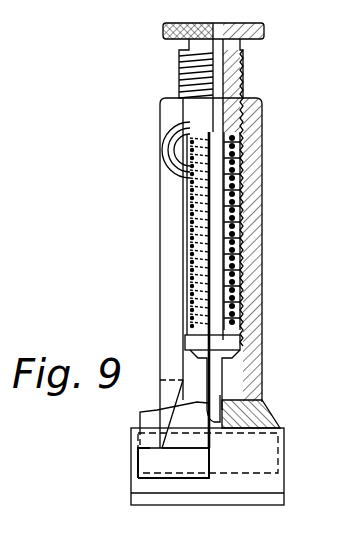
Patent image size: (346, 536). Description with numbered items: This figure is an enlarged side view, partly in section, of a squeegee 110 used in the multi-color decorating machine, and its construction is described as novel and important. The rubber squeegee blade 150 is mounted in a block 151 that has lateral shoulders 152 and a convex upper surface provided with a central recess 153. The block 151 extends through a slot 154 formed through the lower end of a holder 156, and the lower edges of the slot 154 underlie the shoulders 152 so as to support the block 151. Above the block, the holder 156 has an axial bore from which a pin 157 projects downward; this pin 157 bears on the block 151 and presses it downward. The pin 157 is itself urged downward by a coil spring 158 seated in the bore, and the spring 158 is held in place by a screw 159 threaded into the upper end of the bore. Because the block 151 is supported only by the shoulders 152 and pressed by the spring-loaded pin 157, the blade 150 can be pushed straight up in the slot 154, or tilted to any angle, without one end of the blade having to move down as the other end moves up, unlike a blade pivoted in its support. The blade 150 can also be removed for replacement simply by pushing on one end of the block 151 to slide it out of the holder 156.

The squeegee 110 is at (266, 185).
The rubber squeegee blade 150 is at (137, 485).
The block 151 is at (144, 459).
The lateral shoulders 152 is at (142, 448).
The central recess 153 is at (222, 400).
The slot 154 is at (253, 402).
The holder 156 is at (166, 343).
The pin 157 is at (218, 390).
The coil spring 158 is at (230, 272).
The screw 159 is at (255, 40).